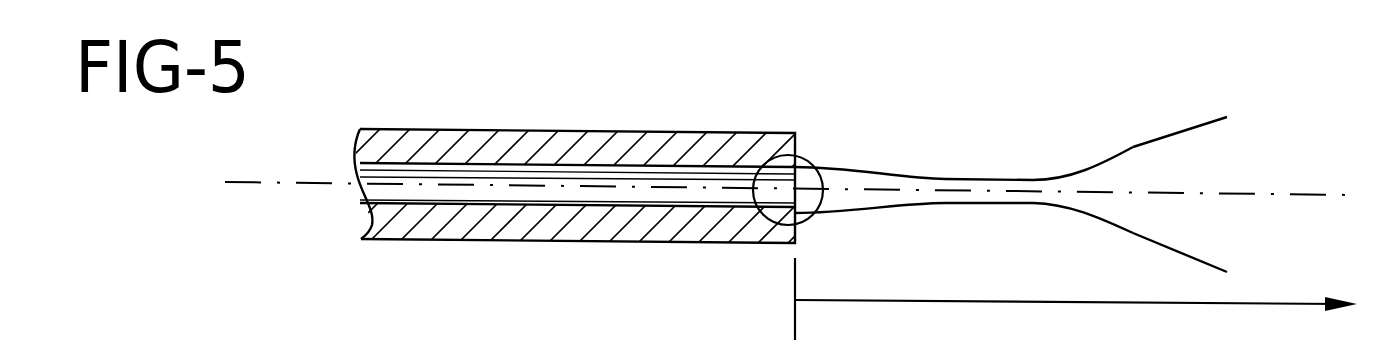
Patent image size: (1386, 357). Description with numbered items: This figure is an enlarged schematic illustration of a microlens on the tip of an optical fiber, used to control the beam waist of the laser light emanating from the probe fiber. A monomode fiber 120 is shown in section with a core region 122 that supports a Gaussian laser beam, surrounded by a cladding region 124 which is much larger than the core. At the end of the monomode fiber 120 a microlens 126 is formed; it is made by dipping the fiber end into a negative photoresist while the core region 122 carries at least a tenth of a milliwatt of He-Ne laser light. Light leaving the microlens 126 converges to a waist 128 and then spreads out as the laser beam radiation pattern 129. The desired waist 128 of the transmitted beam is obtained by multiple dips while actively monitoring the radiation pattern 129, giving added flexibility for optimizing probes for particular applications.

The monomode fiber 120 is at (618, 124).
The core region 122 is at (545, 196).
The cladding region 124 is at (640, 228).
The microlens 126 is at (809, 162).
The waist 128 is at (990, 178).
The laser beam radiation pattern 129 is at (1178, 133).